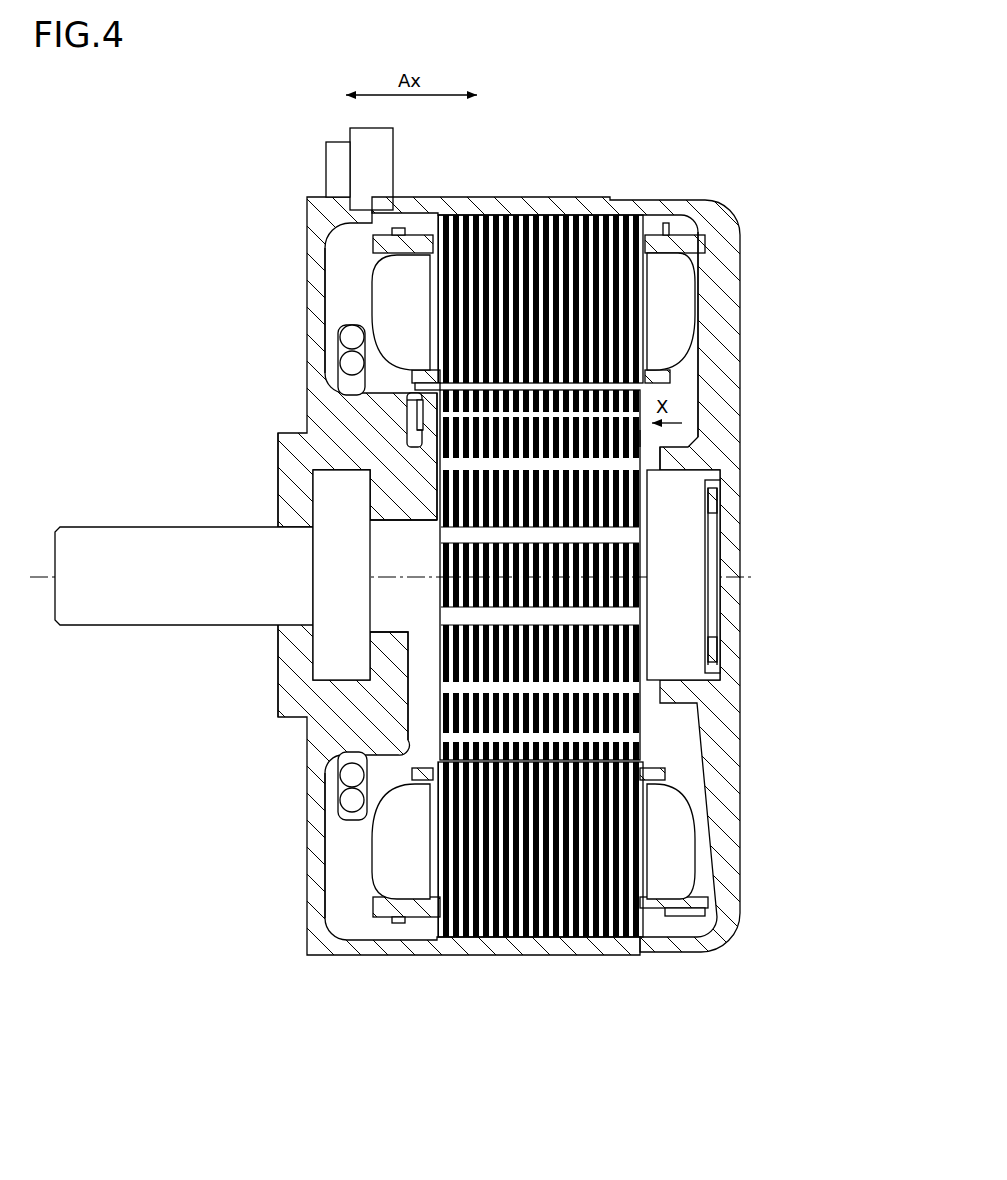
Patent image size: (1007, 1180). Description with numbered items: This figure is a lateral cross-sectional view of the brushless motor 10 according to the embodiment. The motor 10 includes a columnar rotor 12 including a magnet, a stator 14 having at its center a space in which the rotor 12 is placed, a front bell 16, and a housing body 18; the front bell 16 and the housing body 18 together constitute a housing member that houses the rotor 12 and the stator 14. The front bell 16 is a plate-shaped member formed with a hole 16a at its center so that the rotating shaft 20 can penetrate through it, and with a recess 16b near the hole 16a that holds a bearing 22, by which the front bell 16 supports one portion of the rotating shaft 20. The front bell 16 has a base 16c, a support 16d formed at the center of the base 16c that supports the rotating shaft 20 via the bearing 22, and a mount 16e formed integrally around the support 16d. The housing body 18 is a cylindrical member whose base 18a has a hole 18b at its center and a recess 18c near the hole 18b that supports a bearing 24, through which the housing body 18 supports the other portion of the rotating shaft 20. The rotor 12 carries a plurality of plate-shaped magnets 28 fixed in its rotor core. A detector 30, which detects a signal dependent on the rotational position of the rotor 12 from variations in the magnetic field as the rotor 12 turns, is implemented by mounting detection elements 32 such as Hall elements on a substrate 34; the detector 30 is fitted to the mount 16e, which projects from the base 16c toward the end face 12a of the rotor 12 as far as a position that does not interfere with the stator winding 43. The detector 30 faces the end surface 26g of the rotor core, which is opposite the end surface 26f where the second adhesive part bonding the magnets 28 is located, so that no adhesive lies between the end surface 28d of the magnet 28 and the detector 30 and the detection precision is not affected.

The brushless motor 10 is at (411, 1002).
The rotor 12 is at (655, 720).
The end face of the rotor 12a is at (415, 428).
The stator 14 is at (357, 878).
The front bell 16 is at (307, 236).
The hole 16a is at (272, 520).
The recess 16b is at (380, 493).
The base 16c is at (340, 293).
The support 16d is at (403, 724).
The mount 16e is at (340, 365).
The housing body 18 is at (573, 200).
The base 18a is at (698, 410).
The hole 18b is at (690, 532).
The recess 18c is at (678, 492).
The rotating shaft 20 is at (90, 607).
The bearing 22 is at (330, 655).
The bearing 24 is at (690, 665).
The end surface of the rotor core 26f is at (645, 441).
The end surface of the rotor core 26g is at (296, 418).
The magnet 28 is at (625, 535).
The end surface of the magnet 28d is at (395, 458).
The detector 30 is at (440, 390).
The detection element 32 is at (405, 415).
The substrate 34 is at (413, 398).
The stator winding 43 is at (372, 848).